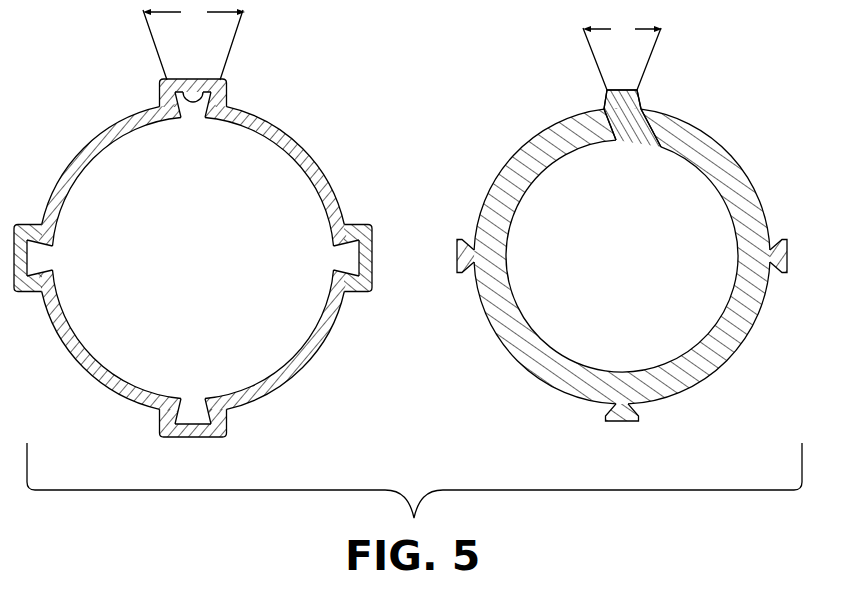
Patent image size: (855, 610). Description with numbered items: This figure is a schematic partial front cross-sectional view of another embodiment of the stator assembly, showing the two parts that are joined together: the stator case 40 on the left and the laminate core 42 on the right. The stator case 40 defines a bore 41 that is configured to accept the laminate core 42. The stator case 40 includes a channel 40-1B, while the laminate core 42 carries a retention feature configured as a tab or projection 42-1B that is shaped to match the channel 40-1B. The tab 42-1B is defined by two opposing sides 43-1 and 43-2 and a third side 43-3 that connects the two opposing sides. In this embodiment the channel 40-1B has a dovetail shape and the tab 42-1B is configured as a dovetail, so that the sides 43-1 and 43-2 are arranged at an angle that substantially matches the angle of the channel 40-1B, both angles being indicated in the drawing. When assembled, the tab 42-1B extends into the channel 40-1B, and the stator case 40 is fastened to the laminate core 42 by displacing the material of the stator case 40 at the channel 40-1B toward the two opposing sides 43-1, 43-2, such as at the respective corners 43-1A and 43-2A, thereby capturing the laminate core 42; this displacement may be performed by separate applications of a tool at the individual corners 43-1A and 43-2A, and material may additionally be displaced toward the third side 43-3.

The stator case 40 is at (254, 114).
The channel 40-1B is at (200, 99).
The bore 41 is at (285, 164).
The laminate core 42 is at (690, 132).
The tab 42-1B is at (624, 82).
The first opposing side 43-1 is at (606, 102).
The second opposing side 43-2 is at (641, 100).
The third side 43-3 is at (608, 88).
The first corner 43-1A is at (603, 110).
The second corner 43-2A is at (640, 110).